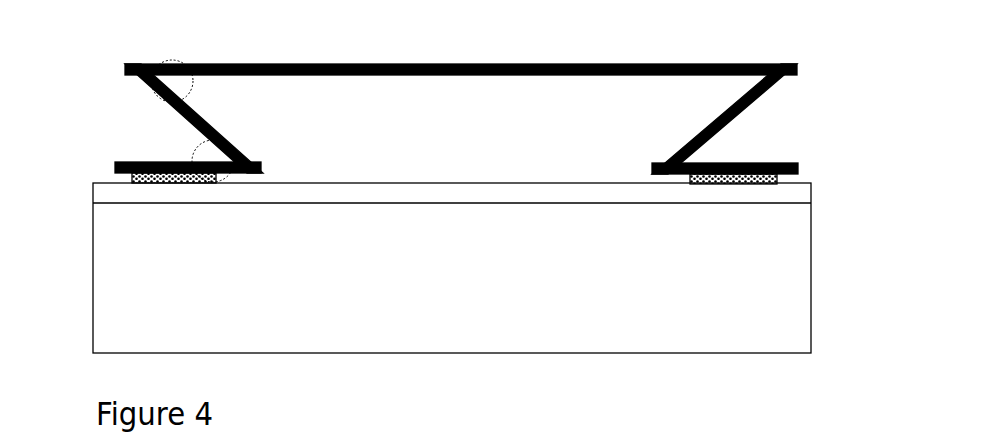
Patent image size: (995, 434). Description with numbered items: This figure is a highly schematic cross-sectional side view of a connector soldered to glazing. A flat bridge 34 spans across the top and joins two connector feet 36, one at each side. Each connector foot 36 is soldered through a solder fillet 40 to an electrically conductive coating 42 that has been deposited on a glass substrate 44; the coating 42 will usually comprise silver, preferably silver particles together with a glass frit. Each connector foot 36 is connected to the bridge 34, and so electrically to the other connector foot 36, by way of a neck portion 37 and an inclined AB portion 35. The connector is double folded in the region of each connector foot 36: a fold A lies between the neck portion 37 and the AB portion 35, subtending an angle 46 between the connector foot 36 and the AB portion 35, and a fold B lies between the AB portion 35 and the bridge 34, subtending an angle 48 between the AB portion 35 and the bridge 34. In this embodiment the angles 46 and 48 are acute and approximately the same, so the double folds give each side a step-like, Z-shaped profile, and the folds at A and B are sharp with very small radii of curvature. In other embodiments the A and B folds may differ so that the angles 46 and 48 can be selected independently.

The bridge 34 is at (616, 65).
The AB portion 35 is at (198, 118).
The connector foot 36 is at (125, 162).
The neck portion 37 is at (253, 175).
The solder fillet 40 is at (155, 183).
The electrically conductive coating 42 is at (103, 193).
The glass substrate 44 is at (107, 292).
The angle 46 is at (193, 160).
The angle 48 is at (180, 88).
The fold A is at (265, 168).
The fold B is at (127, 64).